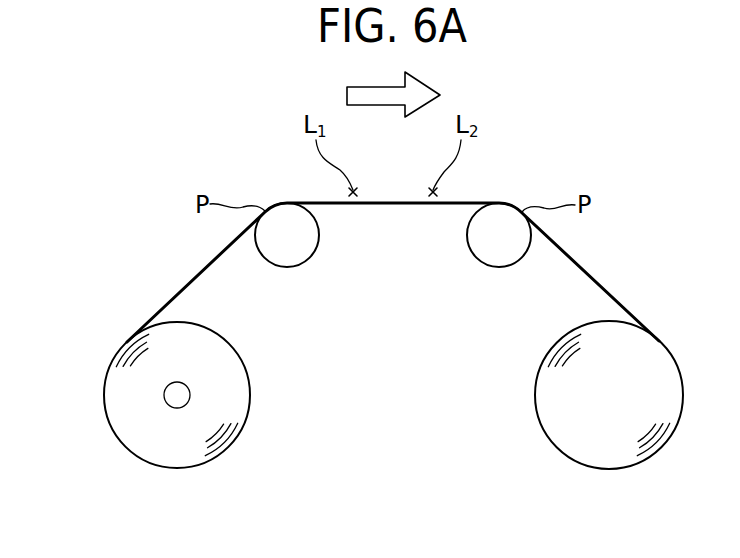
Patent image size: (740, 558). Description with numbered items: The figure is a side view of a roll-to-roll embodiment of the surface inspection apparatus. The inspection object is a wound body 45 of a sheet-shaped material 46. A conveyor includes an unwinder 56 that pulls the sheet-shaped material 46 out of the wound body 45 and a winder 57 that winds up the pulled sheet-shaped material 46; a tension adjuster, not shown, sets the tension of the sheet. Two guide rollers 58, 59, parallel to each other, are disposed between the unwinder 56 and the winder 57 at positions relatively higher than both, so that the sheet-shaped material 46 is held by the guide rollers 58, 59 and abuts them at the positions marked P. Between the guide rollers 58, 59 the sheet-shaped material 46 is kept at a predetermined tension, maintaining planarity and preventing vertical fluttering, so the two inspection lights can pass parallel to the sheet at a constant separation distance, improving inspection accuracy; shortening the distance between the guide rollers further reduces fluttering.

The wound body 45 is at (117, 352).
The sheet-shaped material 46 is at (460, 203).
The unwinder 56 is at (174, 401).
The winder 57 is at (607, 401).
The guide roller 58 is at (287, 258).
The guide roller 59 is at (497, 259).